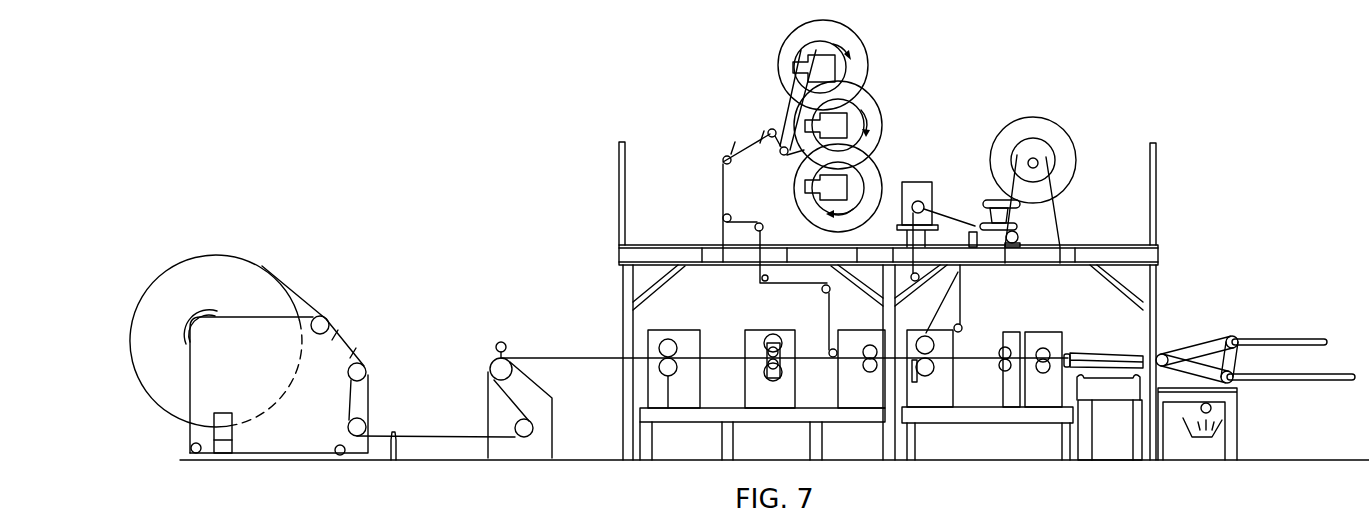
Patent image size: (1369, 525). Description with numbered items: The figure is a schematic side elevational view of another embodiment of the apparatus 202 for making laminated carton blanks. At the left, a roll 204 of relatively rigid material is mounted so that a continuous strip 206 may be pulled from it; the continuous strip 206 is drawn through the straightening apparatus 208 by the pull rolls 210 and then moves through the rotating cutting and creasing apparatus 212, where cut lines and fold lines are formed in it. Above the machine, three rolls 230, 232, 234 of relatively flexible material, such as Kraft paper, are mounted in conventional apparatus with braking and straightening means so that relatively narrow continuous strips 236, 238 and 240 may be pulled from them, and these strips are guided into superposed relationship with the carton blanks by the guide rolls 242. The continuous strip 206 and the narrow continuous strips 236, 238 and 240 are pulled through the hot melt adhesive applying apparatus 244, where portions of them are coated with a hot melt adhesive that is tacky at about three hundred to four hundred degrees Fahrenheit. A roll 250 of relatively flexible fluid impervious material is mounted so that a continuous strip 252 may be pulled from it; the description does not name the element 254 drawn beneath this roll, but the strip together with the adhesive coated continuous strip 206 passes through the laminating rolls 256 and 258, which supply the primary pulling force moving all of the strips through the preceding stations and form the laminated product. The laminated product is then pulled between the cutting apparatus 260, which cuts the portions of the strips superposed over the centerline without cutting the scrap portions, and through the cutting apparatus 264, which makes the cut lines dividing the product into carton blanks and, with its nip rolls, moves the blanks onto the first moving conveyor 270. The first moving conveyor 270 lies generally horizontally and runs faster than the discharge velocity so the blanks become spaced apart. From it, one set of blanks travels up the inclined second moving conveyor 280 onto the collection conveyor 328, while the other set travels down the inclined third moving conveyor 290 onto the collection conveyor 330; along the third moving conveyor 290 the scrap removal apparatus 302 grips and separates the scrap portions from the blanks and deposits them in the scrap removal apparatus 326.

The apparatus 202 is at (372, 196).
The roll of relatively rigid material 204 is at (228, 268).
The continuous strip of relatively rigid material 206 is at (300, 303).
The straightening apparatus 208 is at (440, 361).
The pull rolls 210 is at (648, 344).
The rotating cutting and creasing apparatus 212 is at (750, 340).
The roll of relatively flexible material 230 is at (858, 50).
The roll of relatively flexible material 232 is at (876, 120).
The roll of relatively flexible material 234 is at (868, 173).
The continuous strip of relatively narrow flexible material 236 is at (797, 102).
The continuous strip of relatively narrow flexible material 238 is at (793, 132).
The continuous strip of relatively narrow flexible material 240 is at (805, 150).
The guide rolls 242 is at (830, 358).
The hot melt adhesive applying apparatus 244 is at (867, 403).
The roll of relatively flexible fluid impervious material 250 is at (1062, 142).
The continuous strip of relatively flexible fluid impervious material 252 is at (975, 225).
The guide 254 is at (917, 289).
The laminating roll 256 is at (934, 350).
The laminating roll 258 is at (932, 374).
The cutting apparatus 260 is at (1013, 332).
The cutting apparatus 264 is at (1053, 342).
The first moving conveyor 270 is at (1082, 357).
The second moving conveyor 280 is at (1193, 345).
The third moving conveyor 290 is at (1208, 385).
The scrap removal apparatus 302 is at (1180, 405).
The scrap removal apparatus 326 is at (1220, 432).
The collection conveyor 328 is at (1287, 340).
The collection conveyor 330 is at (1323, 383).